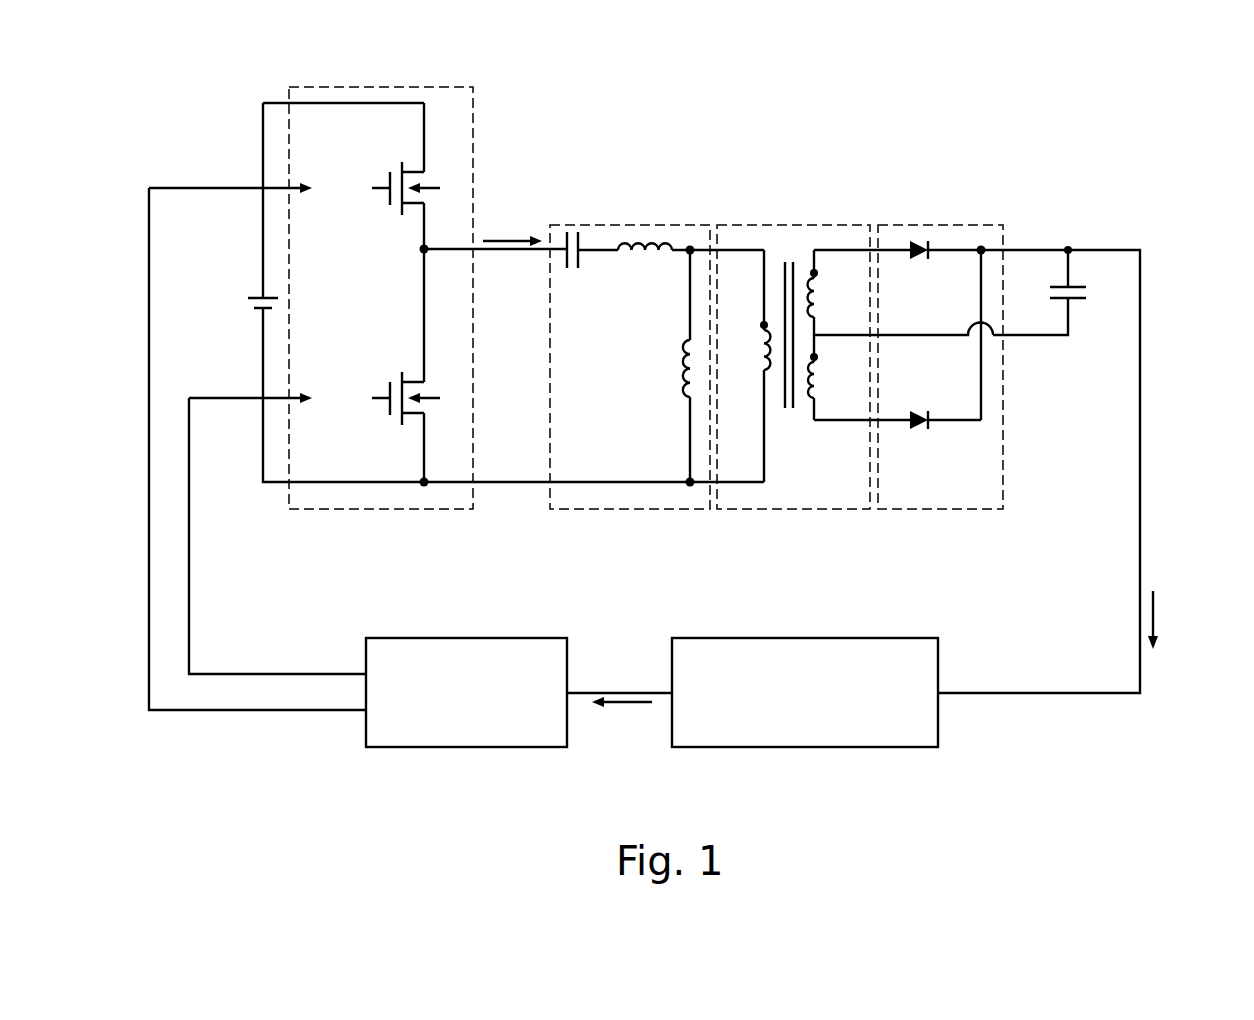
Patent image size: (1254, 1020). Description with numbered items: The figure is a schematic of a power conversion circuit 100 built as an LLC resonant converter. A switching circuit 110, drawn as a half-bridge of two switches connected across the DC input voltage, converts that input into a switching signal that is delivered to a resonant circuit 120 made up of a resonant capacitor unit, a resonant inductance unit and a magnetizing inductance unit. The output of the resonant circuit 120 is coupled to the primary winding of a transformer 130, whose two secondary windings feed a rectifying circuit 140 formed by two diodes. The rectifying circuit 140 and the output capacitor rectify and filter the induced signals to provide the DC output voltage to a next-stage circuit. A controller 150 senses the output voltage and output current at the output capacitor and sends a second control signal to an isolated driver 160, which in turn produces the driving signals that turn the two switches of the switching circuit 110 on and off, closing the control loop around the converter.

The power conversion circuit 100 is at (157, 63).
The switching circuit 110 is at (419, 510).
The resonant circuit 120 is at (618, 510).
The transformer 130 is at (780, 510).
The rectifying circuit 140 is at (930, 510).
The controller 150 is at (829, 707).
The isolated driver 160 is at (490, 707).